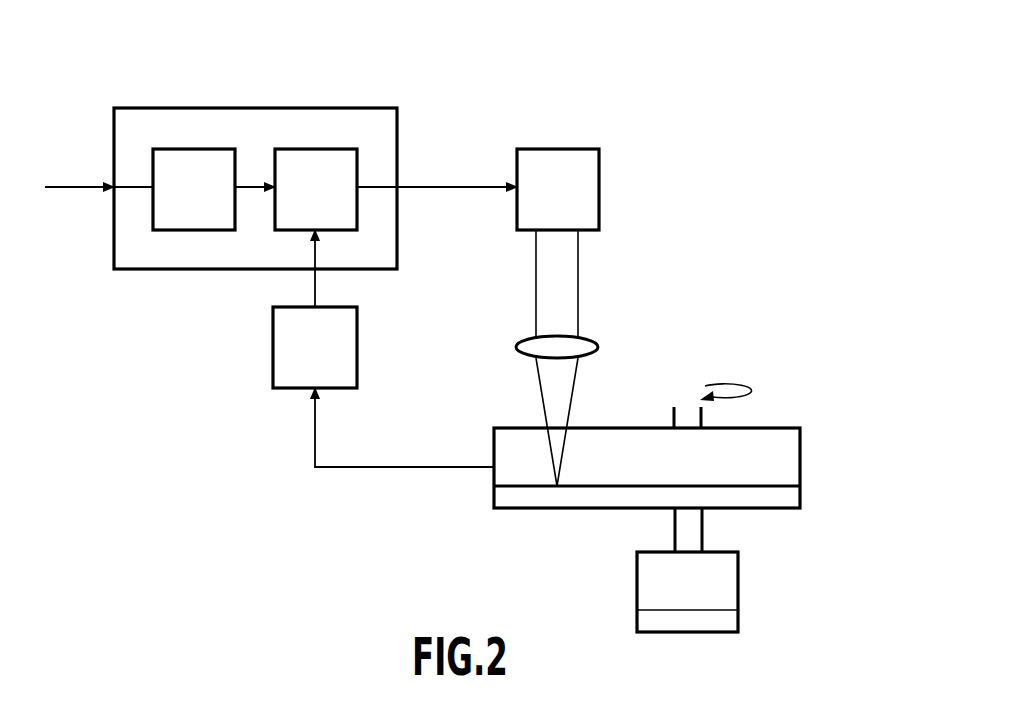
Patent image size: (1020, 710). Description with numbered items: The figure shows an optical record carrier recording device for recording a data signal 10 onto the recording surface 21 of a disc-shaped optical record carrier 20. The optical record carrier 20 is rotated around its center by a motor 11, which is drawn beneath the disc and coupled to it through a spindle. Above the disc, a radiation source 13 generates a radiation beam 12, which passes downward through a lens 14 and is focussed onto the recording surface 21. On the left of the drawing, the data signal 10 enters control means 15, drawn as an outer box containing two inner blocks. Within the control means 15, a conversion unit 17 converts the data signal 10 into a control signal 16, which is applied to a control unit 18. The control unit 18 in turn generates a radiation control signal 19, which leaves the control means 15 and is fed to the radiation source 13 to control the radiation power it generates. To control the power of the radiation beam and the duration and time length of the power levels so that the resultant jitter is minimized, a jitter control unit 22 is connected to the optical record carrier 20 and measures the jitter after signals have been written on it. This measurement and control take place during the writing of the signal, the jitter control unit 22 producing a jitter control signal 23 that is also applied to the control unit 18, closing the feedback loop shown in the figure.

The data signal 10 is at (57, 187).
The motor 11 is at (717, 591).
The radiation beam 12 is at (580, 280).
The radiation source 13 is at (555, 149).
The lens 14 is at (598, 345).
The control means 15 is at (375, 108).
The control signal 16 is at (248, 187).
The conversion unit 17 is at (193, 149).
The control unit 18 is at (313, 149).
The radiation control signal 19 is at (445, 187).
The optical record carrier 20 is at (782, 452).
The recording surface 21 is at (782, 493).
The jitter control unit 22 is at (273, 345).
The jitter control signal 23 is at (312, 287).